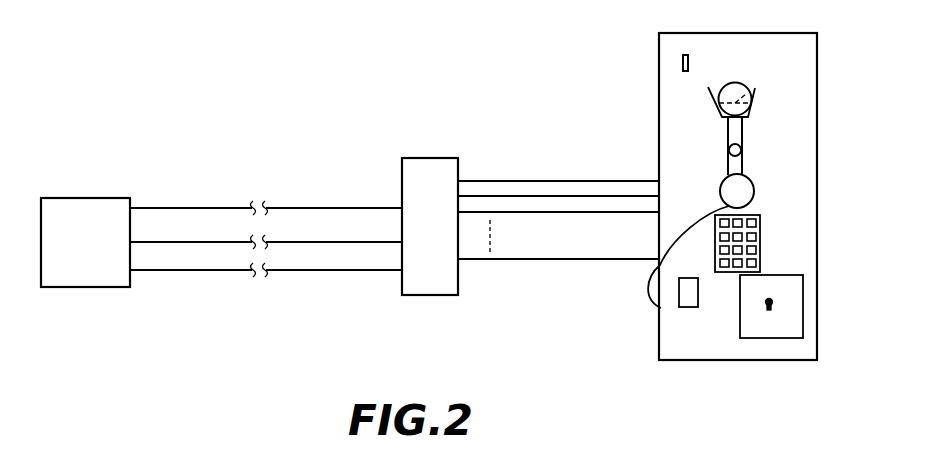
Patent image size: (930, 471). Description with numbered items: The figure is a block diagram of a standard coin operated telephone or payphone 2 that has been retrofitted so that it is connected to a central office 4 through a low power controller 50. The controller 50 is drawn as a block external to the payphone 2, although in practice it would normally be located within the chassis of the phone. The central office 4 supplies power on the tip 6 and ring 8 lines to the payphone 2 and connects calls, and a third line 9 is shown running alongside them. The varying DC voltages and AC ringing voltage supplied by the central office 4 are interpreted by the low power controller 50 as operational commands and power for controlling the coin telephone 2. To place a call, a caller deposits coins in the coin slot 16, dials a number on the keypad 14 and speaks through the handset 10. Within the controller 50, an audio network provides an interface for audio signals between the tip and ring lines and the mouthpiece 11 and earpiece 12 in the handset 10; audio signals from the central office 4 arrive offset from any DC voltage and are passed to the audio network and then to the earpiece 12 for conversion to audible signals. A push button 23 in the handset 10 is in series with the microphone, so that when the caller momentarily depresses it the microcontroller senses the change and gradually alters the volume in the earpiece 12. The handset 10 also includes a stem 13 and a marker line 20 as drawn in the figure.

The payphone 2 is at (745, 33).
The central office 4 is at (87, 198).
The tip line 6 is at (183, 208).
The ring line 8 is at (183, 242).
The cable line 9 is at (183, 270).
The handset 10 is at (749, 80).
The mouthpiece 11 is at (720, 194).
The earpiece 12 is at (736, 82).
The stem 13 is at (728, 128).
The keypad 14 is at (760, 220).
The coin slot 16 is at (683, 61).
The marker line 20 is at (758, 90).
The push button 23 is at (741, 150).
The low power controller 50 is at (443, 158).